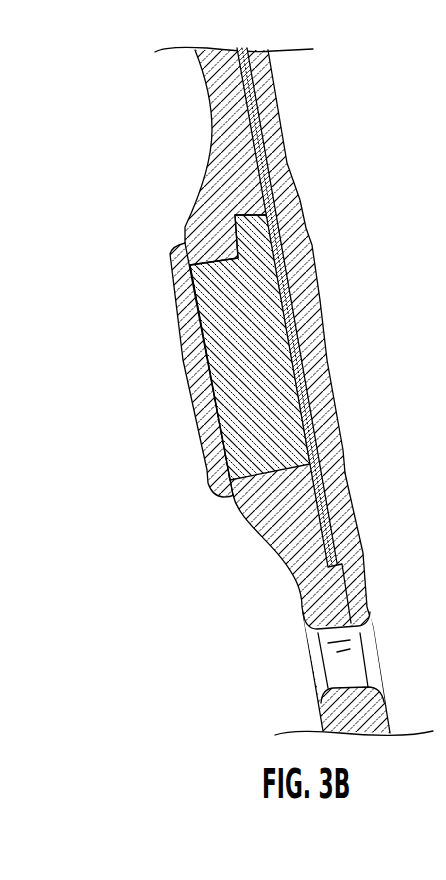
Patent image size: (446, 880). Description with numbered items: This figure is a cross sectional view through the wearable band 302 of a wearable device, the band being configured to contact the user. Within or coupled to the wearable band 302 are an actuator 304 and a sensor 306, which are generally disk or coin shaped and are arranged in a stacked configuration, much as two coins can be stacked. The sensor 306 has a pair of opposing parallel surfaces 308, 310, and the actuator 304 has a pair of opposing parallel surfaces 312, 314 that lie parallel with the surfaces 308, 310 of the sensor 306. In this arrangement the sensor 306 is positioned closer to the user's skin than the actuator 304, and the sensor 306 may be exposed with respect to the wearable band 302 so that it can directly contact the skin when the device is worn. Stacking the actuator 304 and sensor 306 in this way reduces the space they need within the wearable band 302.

The wearable band 302 is at (207, 93).
The actuator 304 is at (253, 343).
The sensor 306 is at (202, 423).
The opposing parallel surface 308 is at (168, 278).
The opposing parallel surface 310 is at (197, 307).
The opposing parallel surface 312 is at (303, 388).
The opposing parallel surface 314 is at (205, 367).